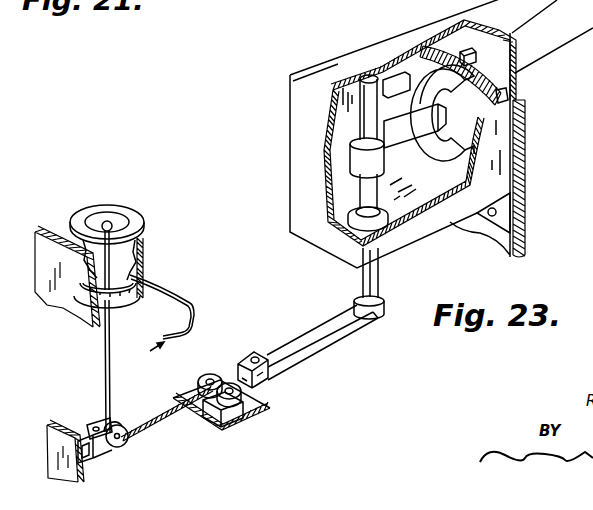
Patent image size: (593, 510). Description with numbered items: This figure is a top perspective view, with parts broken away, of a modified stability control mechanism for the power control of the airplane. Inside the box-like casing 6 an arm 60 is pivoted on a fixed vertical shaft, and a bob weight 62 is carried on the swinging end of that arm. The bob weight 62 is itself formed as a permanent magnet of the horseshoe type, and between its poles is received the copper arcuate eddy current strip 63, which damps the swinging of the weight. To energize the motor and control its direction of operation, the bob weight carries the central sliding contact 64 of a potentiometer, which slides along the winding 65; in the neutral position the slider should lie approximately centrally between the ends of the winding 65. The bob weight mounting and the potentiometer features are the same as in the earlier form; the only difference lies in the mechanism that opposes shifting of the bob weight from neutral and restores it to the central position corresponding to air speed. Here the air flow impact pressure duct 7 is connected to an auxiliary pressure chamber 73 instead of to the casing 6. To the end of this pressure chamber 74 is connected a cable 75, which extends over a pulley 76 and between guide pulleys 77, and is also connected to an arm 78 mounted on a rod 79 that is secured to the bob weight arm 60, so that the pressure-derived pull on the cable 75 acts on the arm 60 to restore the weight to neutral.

The casing 6 is at (331, 62).
The air flow impact pressure duct 7 is at (182, 297).
The arm 60 is at (395, 130).
The bob weight 62 is at (424, 66).
The copper arcuate eddy current strip 63 is at (513, 101).
The central sliding contact 64 is at (490, 50).
The winding 65 is at (513, 100).
The auxiliary pressure chamber 73 is at (142, 246).
The end of the pressure chamber 74 is at (127, 213).
The cable 75 is at (147, 433).
The pulley 76 is at (129, 418).
The guide pulleys 77 is at (209, 376).
The arm 78 is at (305, 333).
The rod 79 is at (380, 281).